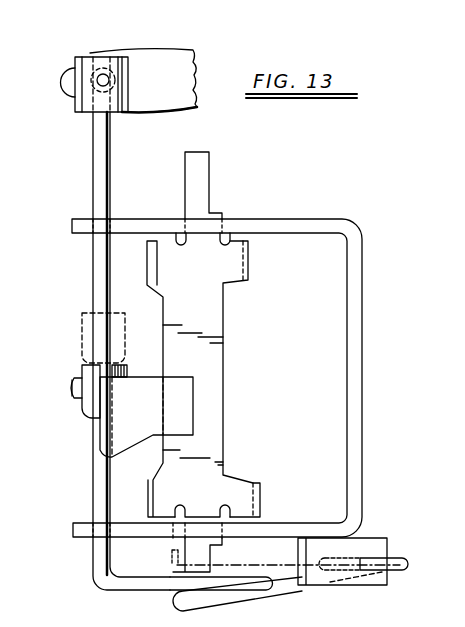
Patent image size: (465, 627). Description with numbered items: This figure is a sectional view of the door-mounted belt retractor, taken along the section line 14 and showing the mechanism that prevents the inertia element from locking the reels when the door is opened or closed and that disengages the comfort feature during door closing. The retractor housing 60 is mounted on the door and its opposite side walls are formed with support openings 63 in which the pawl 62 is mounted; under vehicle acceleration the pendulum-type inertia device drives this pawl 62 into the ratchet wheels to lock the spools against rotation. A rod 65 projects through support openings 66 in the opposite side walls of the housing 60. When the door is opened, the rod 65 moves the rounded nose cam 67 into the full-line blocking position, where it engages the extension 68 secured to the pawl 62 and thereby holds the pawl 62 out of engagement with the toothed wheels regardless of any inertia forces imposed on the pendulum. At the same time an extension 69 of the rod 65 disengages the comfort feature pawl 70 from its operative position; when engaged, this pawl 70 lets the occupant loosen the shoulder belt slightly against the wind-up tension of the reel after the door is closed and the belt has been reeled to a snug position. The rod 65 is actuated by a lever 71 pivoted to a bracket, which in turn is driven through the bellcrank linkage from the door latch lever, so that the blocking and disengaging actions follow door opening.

The section line 14- 14 is at (57, 278).
The housing 60 is at (328, 206).
The pawl 62 is at (213, 317).
The support openings 63 is at (212, 215).
The rod 65 is at (93, 283).
The support openings 66 is at (110, 226).
The rounded nose cam 67 is at (82, 340).
The extension 68 is at (134, 438).
The extension 69 is at (140, 582).
The comfort feature pawl 70 is at (250, 596).
The lever 71 is at (150, 60).